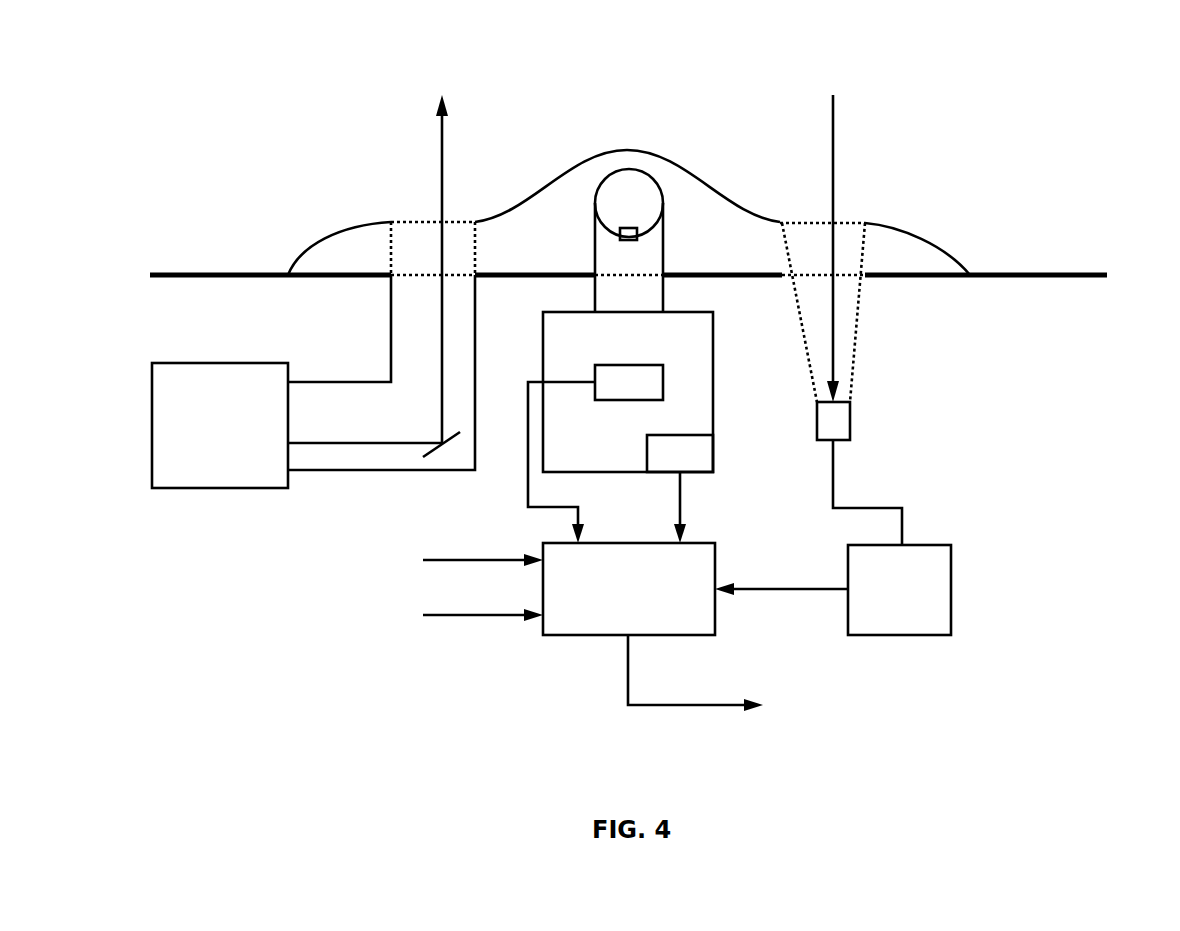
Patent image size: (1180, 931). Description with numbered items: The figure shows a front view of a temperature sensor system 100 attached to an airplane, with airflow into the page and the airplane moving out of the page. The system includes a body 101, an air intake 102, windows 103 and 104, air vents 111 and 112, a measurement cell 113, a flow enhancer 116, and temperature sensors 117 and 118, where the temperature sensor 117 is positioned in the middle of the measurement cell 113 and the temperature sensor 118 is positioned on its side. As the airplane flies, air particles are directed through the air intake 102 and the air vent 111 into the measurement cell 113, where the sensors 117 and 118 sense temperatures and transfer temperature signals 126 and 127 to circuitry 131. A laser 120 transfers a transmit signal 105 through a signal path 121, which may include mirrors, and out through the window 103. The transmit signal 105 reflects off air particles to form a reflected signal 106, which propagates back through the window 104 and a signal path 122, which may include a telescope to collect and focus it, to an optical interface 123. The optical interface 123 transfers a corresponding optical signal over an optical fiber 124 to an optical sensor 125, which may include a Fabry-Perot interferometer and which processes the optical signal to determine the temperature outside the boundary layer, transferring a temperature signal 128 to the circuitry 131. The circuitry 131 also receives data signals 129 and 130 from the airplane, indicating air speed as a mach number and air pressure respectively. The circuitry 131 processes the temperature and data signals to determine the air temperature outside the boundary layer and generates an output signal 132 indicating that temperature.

The temperature sensor system 100 is at (942, 51).
The body 101 is at (645, 150).
The air intake 102 is at (664, 206).
The window 103 is at (405, 222).
The window 104 is at (848, 222).
The transmit signal 105 is at (443, 168).
The reflected signal 106 is at (835, 148).
The air vent 111 is at (680, 257).
The air vent 112 is at (664, 258).
The measurement cell 113 is at (714, 383).
The flow enhancer 116 is at (635, 228).
The temperature sensor 117 is at (633, 365).
The temperature sensor 118 is at (647, 455).
The laser 120 is at (306, 381).
The signal path 121 is at (477, 362).
The signal path 122 is at (858, 352).
The optical interface 123 is at (852, 425).
The optical fiber 124 is at (835, 478).
The optical sensor 125 is at (899, 590).
The temperature signal 126 is at (528, 507).
The temperature signal 127 is at (682, 510).
The temperature signal 128 is at (768, 590).
The data signal 129 is at (458, 560).
The data signal 130 is at (440, 617).
The circuitry 131 is at (629, 589).
The signal 132 is at (680, 705).